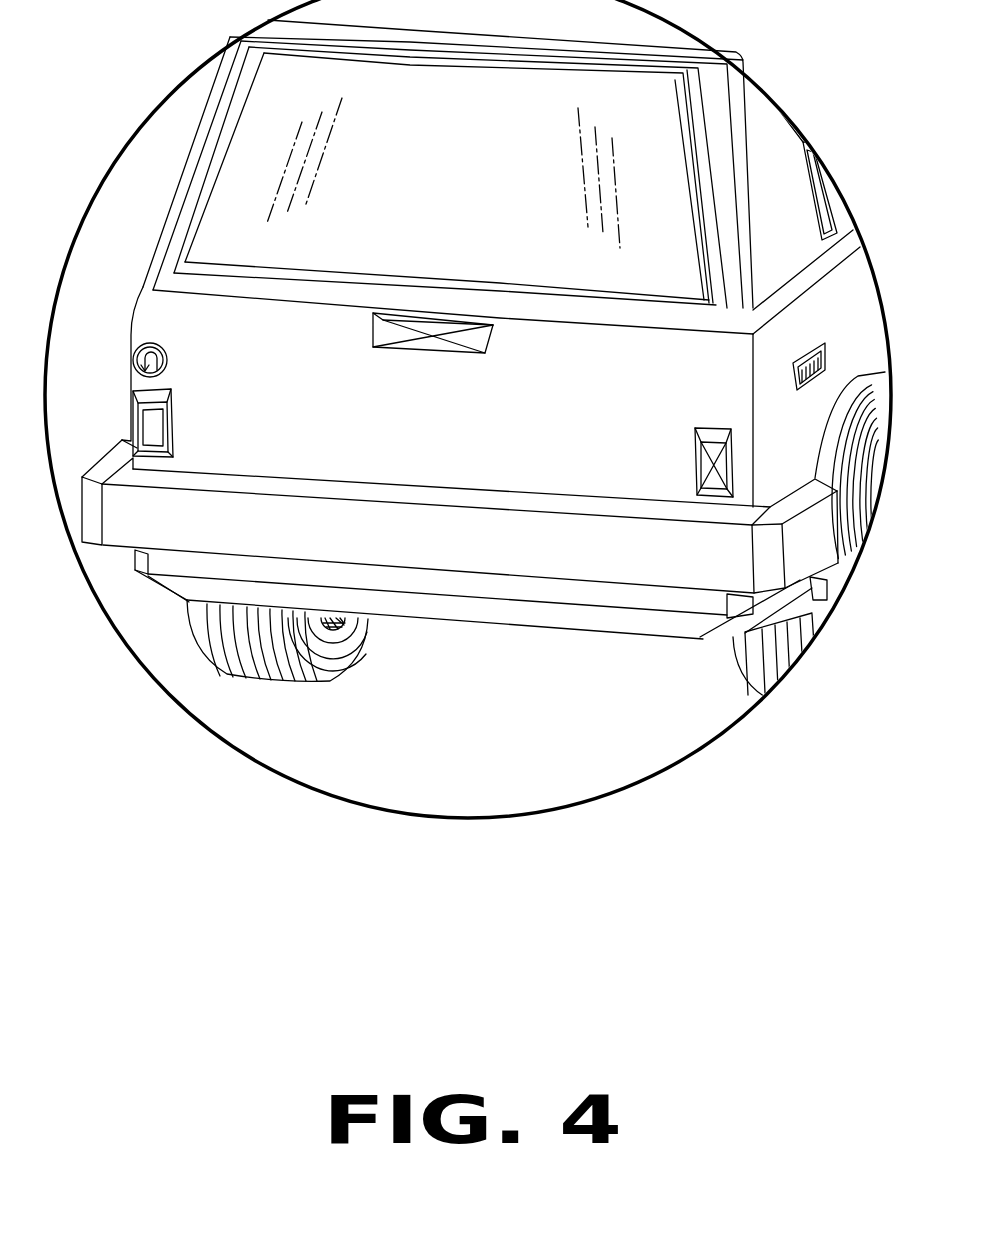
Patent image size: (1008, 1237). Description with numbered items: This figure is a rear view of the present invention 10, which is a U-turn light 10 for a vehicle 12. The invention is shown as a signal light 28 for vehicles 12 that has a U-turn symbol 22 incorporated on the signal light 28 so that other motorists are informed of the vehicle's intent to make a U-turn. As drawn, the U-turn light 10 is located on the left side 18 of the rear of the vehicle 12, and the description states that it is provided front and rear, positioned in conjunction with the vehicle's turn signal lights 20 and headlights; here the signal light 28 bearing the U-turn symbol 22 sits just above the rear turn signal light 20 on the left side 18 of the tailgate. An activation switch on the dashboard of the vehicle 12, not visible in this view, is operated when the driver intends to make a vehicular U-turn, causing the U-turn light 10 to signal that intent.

The U-turn light 10 is at (113, 325).
The vehicle 12 is at (175, 198).
The left side 18 is at (223, 433).
The turn signal light 20 is at (155, 427).
The U-turn symbol 22 is at (140, 358).
The signal light 28 is at (167, 362).